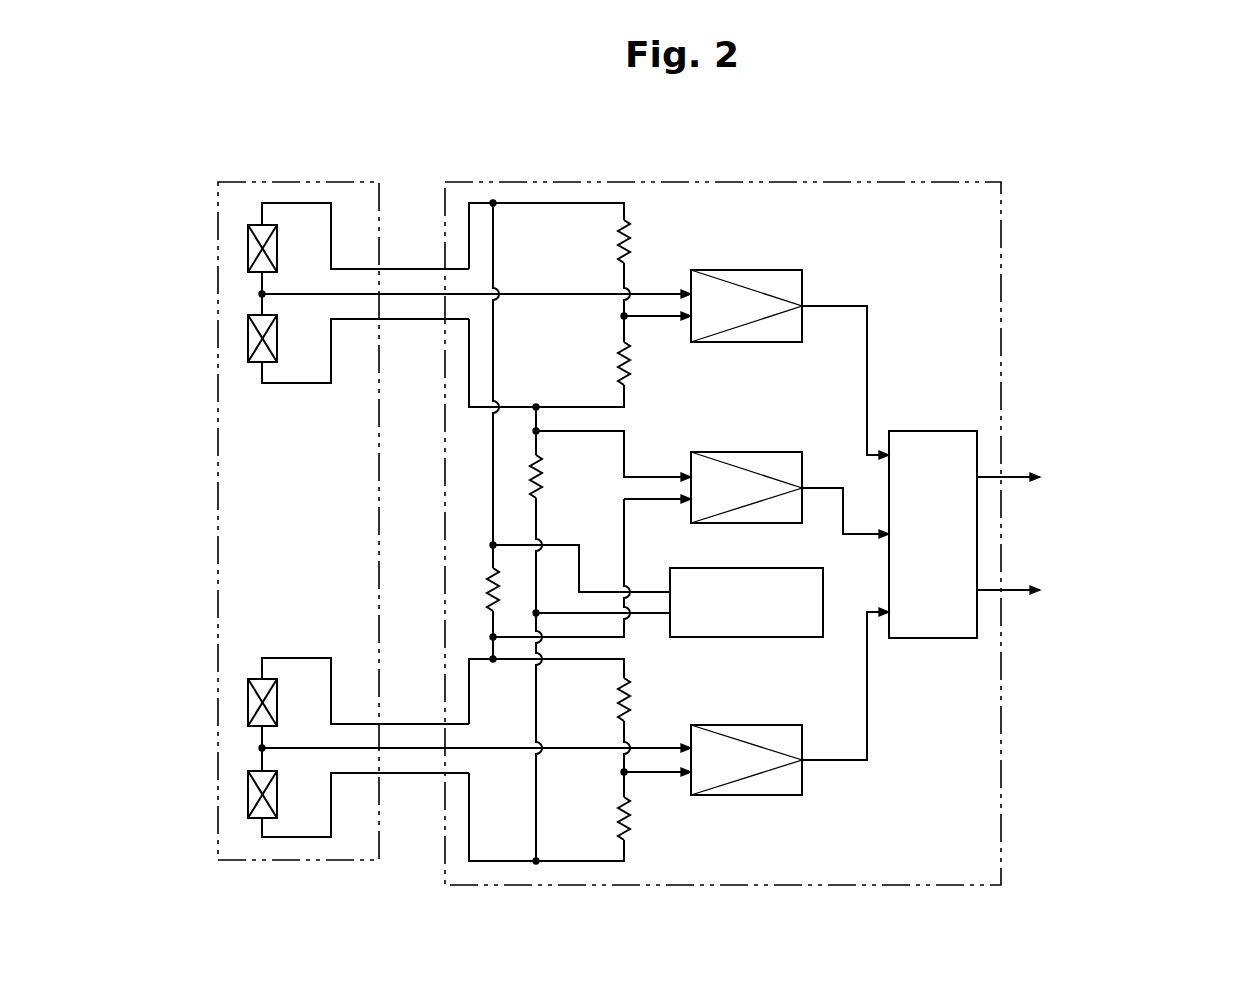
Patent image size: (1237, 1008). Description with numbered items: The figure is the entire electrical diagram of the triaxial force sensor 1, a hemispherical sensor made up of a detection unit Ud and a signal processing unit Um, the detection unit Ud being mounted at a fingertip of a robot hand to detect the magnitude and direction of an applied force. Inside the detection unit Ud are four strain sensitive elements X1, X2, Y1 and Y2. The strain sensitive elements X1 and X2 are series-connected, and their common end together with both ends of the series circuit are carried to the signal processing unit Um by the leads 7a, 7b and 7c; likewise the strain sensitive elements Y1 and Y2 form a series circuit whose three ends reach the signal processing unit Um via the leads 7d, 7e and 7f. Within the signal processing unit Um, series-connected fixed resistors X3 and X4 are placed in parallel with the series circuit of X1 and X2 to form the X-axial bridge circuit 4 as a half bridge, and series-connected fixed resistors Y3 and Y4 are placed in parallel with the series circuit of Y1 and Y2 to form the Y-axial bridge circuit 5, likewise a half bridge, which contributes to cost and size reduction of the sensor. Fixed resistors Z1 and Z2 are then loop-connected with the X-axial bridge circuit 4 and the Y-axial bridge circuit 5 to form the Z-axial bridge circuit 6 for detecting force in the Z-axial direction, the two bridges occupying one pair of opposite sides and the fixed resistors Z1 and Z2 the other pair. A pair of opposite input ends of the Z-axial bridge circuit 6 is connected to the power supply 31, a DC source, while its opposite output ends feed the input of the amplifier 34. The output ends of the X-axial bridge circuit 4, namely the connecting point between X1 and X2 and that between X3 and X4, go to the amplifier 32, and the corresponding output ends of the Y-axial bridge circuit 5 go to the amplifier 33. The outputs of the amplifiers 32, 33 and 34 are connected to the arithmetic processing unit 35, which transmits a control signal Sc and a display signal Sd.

The triaxial force sensor 1 is at (1050, 199).
The X-axial bridge circuit 4 is at (586, 302).
The Y-axial bridge circuit 5 is at (595, 760).
The Z-axial bridge circuit 6 is at (600, 532).
The lead 7a is at (408, 269).
The lead 7b is at (405, 295).
The lead 7c is at (431, 320).
The lead 7d is at (407, 724).
The lead 7e is at (405, 749).
The lead 7f is at (433, 774).
The power supply 31 is at (790, 639).
The amplifier 32 is at (796, 270).
The amplifier 33 is at (782, 796).
The amplifier 34 is at (790, 452).
The arithmetic processing unit 35 is at (931, 431).
The strain sensitive element X1 is at (248, 245).
The strain sensitive element X2 is at (248, 338).
The fixed resistor X3 is at (612, 370).
The fixed resistor X4 is at (612, 255).
The strain sensitive element Y1 is at (248, 702).
The strain sensitive element Y2 is at (248, 793).
The fixed resistor Y3 is at (612, 805).
The fixed resistor Y4 is at (612, 707).
The fixed resistor Z1 is at (483, 585).
The fixed resistor Z2 is at (545, 497).
The detection unit Ud is at (381, 207).
The signal processing unit Um is at (1001, 350).